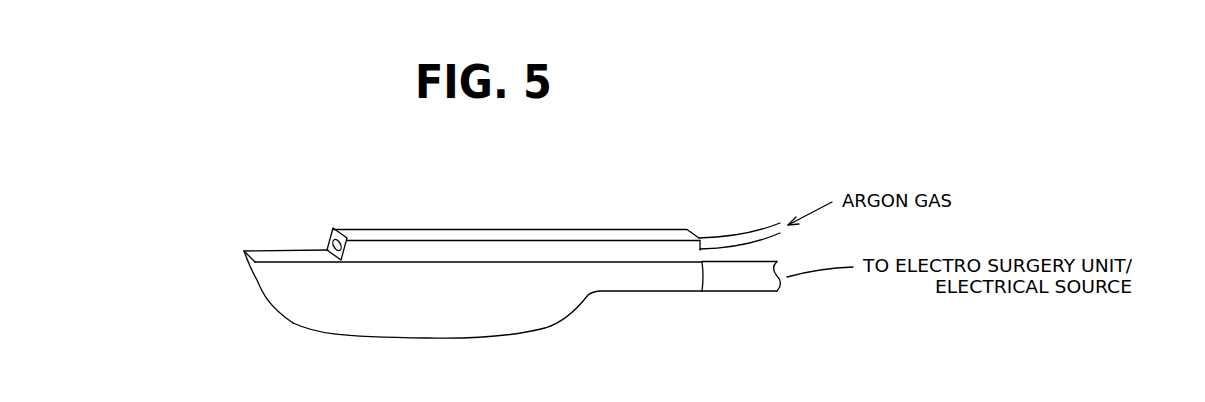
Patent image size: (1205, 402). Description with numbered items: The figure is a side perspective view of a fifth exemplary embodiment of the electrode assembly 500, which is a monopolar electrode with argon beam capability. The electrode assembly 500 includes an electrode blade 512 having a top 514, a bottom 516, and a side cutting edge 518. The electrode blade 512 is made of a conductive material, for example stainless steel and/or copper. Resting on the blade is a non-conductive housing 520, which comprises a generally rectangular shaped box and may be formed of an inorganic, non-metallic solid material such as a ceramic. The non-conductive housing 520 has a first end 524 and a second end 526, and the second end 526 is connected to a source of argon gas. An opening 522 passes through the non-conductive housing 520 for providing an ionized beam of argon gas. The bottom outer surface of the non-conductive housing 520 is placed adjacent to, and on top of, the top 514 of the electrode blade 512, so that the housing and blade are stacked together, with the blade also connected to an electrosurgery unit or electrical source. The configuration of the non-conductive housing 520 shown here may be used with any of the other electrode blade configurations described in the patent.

The electrode assembly 500 is at (647, 174).
The electrode blade 512 is at (560, 303).
The top 514 is at (268, 258).
The bottom 516 is at (398, 338).
The side cutting edge 518 is at (263, 296).
The non-conductive housing 520 is at (526, 228).
The opening 522 is at (340, 232).
The first end 524 is at (333, 229).
The second end 526 is at (697, 232).